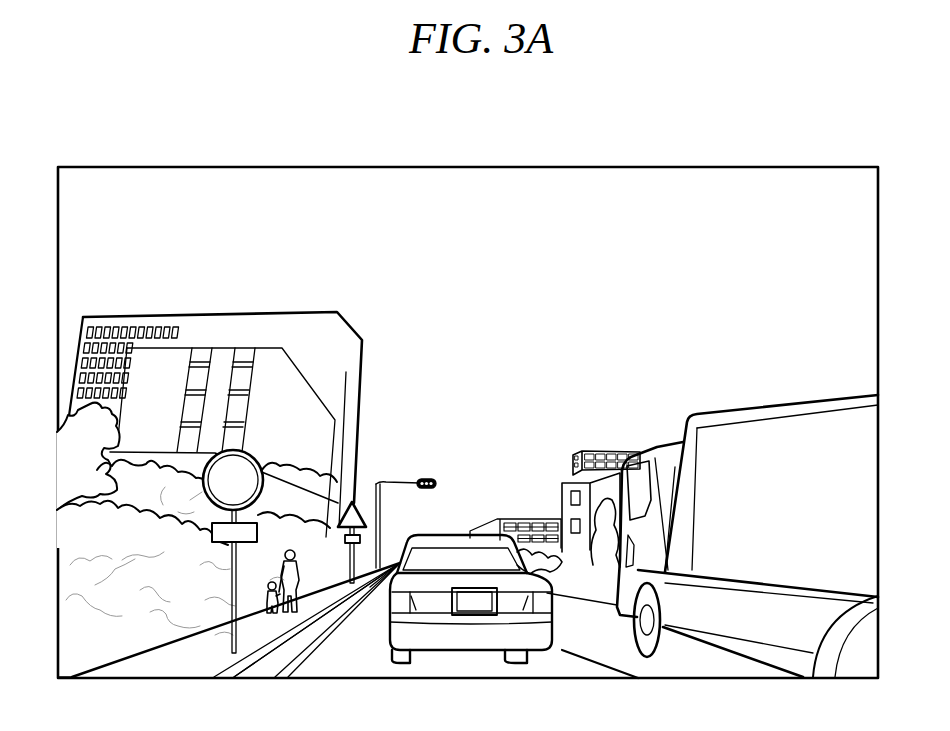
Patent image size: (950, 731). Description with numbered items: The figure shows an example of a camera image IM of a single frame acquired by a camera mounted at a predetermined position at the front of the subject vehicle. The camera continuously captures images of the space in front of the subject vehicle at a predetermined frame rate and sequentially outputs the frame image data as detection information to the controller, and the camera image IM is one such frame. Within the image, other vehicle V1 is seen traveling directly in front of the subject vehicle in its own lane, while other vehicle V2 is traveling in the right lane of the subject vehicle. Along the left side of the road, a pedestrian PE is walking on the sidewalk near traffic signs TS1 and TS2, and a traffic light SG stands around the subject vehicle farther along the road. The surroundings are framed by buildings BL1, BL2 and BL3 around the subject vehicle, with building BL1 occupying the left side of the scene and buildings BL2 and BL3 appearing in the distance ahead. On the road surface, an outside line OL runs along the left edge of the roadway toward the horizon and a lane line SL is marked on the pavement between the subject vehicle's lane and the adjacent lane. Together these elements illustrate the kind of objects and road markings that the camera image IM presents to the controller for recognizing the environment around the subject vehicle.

The camera image IM is at (548, 166).
The building BL1 is at (164, 314).
The traffic sign TS1 is at (254, 459).
The traffic sign TS2 is at (356, 497).
The traffic light SG is at (431, 478).
The other vehicle V1 is at (453, 535).
The other vehicle V2 is at (725, 413).
The building BL2 is at (605, 450).
The building BL3 is at (522, 518).
The pedestrian PE is at (298, 591).
The outside line OL is at (327, 640).
The lane line SL is at (562, 650).